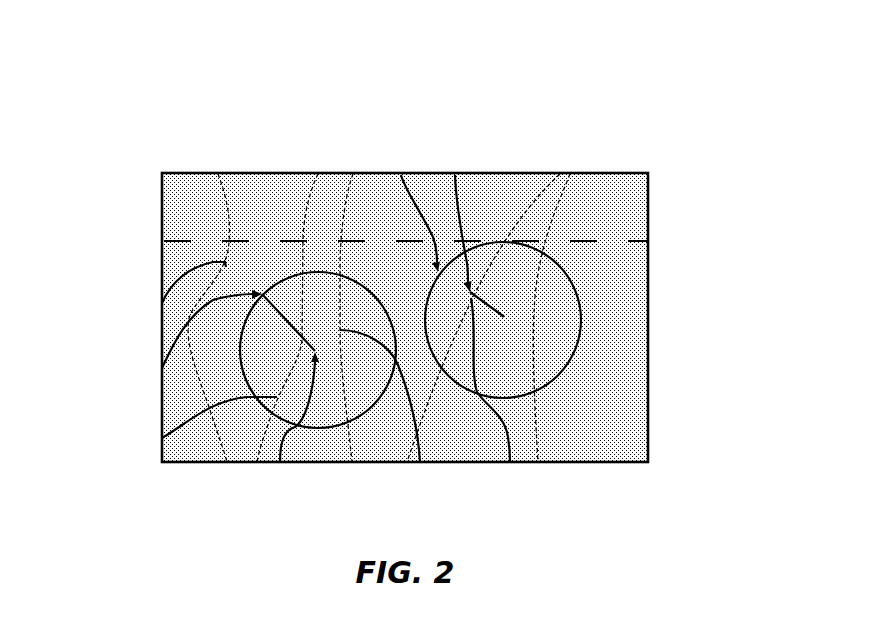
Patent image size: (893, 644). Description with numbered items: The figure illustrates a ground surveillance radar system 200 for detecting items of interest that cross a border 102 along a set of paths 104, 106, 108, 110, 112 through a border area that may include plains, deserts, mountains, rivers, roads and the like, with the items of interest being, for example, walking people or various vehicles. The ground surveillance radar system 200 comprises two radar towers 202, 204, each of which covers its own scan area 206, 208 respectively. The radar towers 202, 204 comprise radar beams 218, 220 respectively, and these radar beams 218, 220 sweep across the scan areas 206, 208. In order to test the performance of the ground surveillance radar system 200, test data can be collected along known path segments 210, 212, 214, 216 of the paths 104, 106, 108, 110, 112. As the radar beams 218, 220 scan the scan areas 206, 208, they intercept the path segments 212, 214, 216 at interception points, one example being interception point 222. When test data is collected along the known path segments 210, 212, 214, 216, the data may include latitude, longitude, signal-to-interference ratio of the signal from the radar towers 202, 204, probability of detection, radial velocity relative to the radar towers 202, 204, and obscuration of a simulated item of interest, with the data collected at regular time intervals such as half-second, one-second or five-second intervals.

The ground surveillance radar system 200 is at (681, 83).
The border 102 is at (162, 241).
The path 104 is at (218, 174).
The path 106 is at (318, 174).
The path 108 is at (353, 174).
The path 110 is at (560, 174).
The path 112 is at (572, 174).
The radar tower 202 is at (280, 462).
The radar tower 204 is at (510, 306).
The scan area 206 is at (317, 438).
The scan area 208 is at (593, 318).
The known path segment 210 is at (162, 300).
The known path segment 212 is at (162, 435).
The known path segment 214 is at (420, 462).
The known path segment 216 is at (510, 462).
The radar beam 218 is at (162, 368).
The radar beam 220 is at (401, 175).
The interception point 222 is at (455, 175).